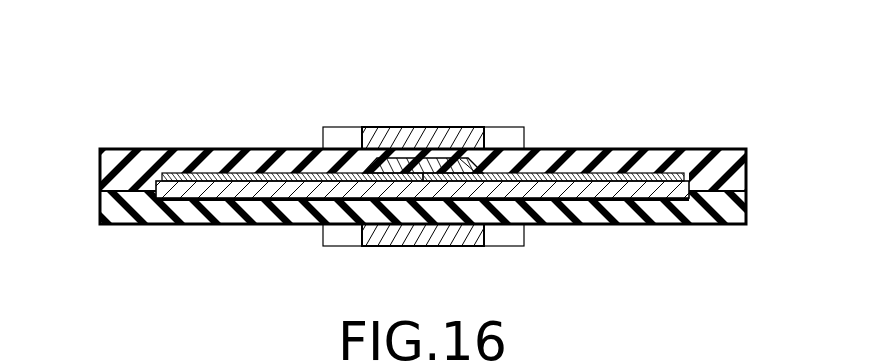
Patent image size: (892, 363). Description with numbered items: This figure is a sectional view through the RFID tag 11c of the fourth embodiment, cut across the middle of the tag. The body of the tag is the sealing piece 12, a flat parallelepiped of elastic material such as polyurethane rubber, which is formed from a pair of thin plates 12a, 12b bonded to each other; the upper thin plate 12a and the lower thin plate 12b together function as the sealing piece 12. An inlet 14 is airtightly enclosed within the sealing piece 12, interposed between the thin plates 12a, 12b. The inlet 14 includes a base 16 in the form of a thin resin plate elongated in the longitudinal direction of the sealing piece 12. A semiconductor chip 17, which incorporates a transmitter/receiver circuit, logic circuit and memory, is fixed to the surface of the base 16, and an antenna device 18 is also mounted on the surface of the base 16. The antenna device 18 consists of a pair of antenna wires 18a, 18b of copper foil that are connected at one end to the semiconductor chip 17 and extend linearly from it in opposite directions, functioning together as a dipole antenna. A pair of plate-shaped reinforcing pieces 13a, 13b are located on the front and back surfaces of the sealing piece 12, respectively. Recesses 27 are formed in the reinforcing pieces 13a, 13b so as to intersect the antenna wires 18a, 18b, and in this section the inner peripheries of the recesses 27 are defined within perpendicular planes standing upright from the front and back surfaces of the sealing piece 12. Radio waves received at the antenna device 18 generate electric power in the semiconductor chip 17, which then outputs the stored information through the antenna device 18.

The RFID tag 11c is at (401, 166).
The sealing piece 12 is at (401, 164).
The thin plate 12a is at (119, 147).
The thin plate 12b is at (157, 221).
The reinforcing piece 13a is at (438, 140).
The reinforcing piece 13b is at (441, 242).
The inlet 14 is at (465, 160).
The base 16 is at (663, 190).
The semiconductor chip 17 is at (388, 162).
The antenna device 18 is at (429, 176).
The antenna wire 18a is at (225, 183).
The antenna wire 18b is at (658, 173).
The recess 27 is at (360, 140).